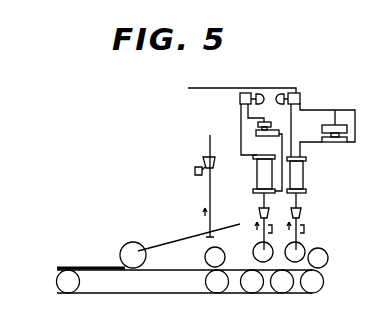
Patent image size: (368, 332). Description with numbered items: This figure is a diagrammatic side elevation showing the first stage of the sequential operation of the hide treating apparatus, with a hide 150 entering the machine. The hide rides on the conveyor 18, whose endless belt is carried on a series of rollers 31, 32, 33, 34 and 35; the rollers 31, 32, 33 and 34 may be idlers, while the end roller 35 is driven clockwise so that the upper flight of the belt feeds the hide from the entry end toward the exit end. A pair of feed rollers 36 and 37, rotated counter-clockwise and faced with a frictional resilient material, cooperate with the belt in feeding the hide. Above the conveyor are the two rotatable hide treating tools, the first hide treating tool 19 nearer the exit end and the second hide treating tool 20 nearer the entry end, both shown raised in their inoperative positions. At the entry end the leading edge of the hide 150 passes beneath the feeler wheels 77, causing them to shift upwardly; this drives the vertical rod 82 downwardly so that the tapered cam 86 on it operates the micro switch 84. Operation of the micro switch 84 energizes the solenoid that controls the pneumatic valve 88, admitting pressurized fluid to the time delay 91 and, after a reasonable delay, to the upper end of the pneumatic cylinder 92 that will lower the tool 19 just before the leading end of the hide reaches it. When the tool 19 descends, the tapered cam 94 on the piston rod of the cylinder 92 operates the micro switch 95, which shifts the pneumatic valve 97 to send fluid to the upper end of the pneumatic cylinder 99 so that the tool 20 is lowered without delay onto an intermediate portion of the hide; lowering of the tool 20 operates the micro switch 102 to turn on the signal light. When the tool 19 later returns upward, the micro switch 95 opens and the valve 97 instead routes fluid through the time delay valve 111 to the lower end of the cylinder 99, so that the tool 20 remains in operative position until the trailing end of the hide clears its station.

The conveyor 18 is at (162, 266).
The first hide treating tool 19 is at (305, 247).
The second hide treating tool 20 is at (253, 253).
The roller 31 is at (60, 289).
The roller 32 is at (214, 290).
The roller 33 is at (251, 290).
The roller 34 is at (288, 288).
The end roller 35 is at (322, 286).
The feed roller 36 is at (208, 264).
The feed roller 37 is at (328, 258).
The feeler wheels 77 is at (130, 248).
The vertical rod 82 is at (208, 200).
The micro switch 84 is at (196, 174).
The tapered cam 86 is at (205, 158).
The pneumatic valve 88 is at (301, 98).
The time delay 91 is at (330, 143).
The pneumatic cylinder 92 is at (304, 178).
The tapered cam 94 is at (300, 212).
The micro switch 95 is at (304, 228).
The pneumatic valve 97 is at (251, 93).
The pneumatic cylinder 99 is at (256, 180).
The micro switch 102 is at (256, 236).
The time delay valve 111 is at (275, 135).
The hide 150 is at (96, 268).